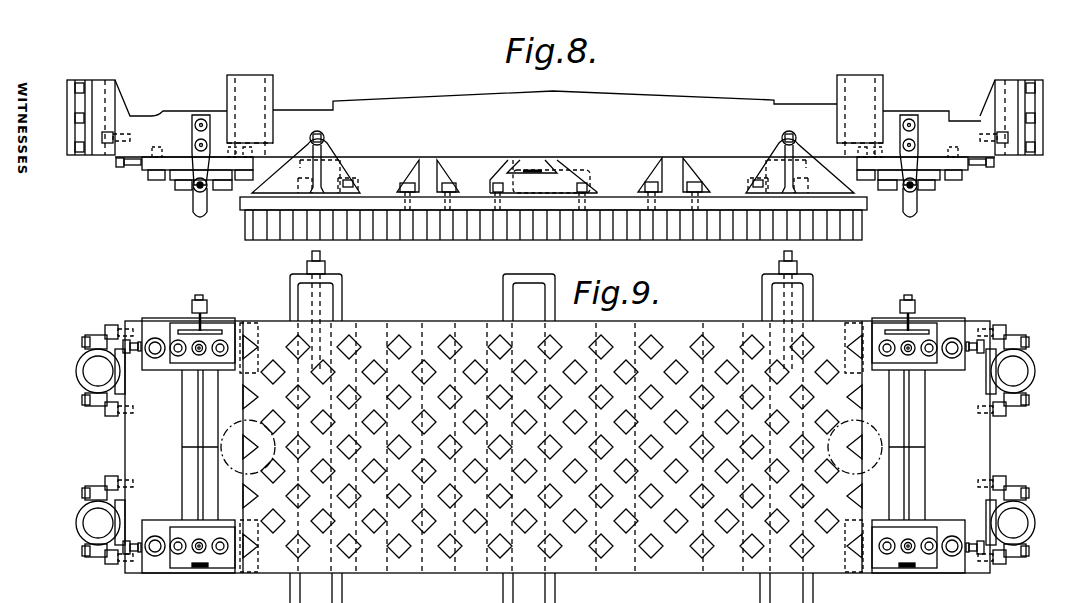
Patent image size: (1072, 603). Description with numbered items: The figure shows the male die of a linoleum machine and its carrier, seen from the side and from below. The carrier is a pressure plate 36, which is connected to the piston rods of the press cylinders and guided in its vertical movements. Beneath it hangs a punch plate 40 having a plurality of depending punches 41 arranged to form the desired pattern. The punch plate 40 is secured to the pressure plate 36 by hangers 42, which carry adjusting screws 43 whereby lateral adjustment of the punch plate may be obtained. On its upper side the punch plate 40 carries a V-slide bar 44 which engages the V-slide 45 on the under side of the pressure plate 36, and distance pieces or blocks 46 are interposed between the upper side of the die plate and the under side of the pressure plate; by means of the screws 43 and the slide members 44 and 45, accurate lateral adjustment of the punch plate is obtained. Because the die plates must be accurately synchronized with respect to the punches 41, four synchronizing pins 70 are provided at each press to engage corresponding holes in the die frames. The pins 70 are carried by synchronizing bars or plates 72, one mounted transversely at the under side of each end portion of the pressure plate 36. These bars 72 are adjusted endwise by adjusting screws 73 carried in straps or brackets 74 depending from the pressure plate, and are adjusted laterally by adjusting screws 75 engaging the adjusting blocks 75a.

In FIG. 8, the pressure plate 36 is at (555, 116).
In FIG. 8, the punch plate 40 is at (483, 206).
In FIG. 9, the punch plate 40 is at (423, 322).
In FIG. 8, the punches 41 is at (582, 234).
In FIG. 9, the punches 41 is at (422, 359).
In FIG. 8, the hangers 42 is at (333, 158).
In FIG. 9, the hangers 42 is at (347, 290).
In FIG. 8, the adjusting screws 43 is at (325, 135).
In FIG. 9, the adjusting screws 43 is at (326, 257).
In FIG. 8, the V-slide bar 44 is at (544, 186).
In FIG. 8, the V-slide 45 is at (531, 160).
In FIG. 8, the distance pieces or blocks 46 is at (426, 170).
In FIG. 8, the synchronizing pins 70 is at (202, 219).
In FIG. 9, the synchronizing pins 70 is at (197, 356).
In FIG. 8, the synchronizing bars or plates 72 is at (190, 186).
In FIG. 9, the synchronizing bars or plates 72 is at (191, 409).
In FIG. 8, the adjusting screws 73 is at (207, 189).
In FIG. 9, the adjusting screws 73 is at (200, 300).
In FIG. 8, the straps or brackets 74 is at (192, 135).
In FIG. 9, the straps or brackets 74 is at (212, 310).
In FIG. 8, the adjusting screws 75 is at (117, 168).
In FIG. 9, the adjusting screws 75 is at (134, 342).
In FIG. 8, the adjusting blocks 75a is at (167, 179).
In FIG. 9, the adjusting blocks 75a is at (160, 328).